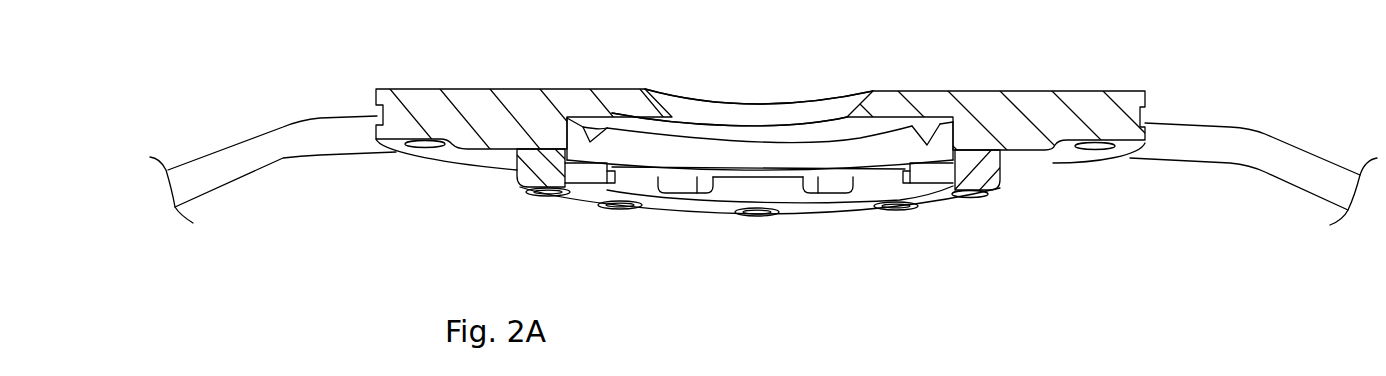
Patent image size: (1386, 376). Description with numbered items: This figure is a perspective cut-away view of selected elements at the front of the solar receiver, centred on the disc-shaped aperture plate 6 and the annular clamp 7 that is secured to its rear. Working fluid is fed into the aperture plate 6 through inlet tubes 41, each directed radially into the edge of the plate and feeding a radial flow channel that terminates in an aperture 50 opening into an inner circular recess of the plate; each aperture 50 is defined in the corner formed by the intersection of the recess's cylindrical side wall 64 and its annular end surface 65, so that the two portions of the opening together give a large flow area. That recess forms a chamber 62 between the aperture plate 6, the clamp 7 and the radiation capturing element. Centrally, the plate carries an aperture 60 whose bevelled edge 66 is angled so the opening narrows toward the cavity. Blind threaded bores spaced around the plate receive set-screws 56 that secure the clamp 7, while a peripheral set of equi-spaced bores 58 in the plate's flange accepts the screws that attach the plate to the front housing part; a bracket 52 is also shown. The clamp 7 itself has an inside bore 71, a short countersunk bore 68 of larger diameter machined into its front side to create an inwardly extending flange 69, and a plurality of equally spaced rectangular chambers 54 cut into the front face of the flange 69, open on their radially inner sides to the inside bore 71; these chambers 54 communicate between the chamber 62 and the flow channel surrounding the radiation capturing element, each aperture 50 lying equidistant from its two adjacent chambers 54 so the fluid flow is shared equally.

The aperture plate 6 is at (1040, 100).
The clamp 7 is at (1003, 183).
The inlet tube 41 is at (322, 138).
The aperture 50 is at (592, 122).
The bracket 52 is at (592, 184).
The chambers 54 is at (582, 176).
The set-screws 56 is at (533, 193).
The bores 58 is at (425, 148).
The aperture 60 is at (768, 112).
The chamber 62 is at (706, 146).
The cylindrical side wall 64 is at (660, 150).
The annular end surface 65 is at (641, 120).
The bevelled edge 66 is at (818, 108).
The countersunk bore 68 is at (942, 162).
The inwardly extending flange 69 is at (746, 193).
The inside bore 71 is at (787, 193).